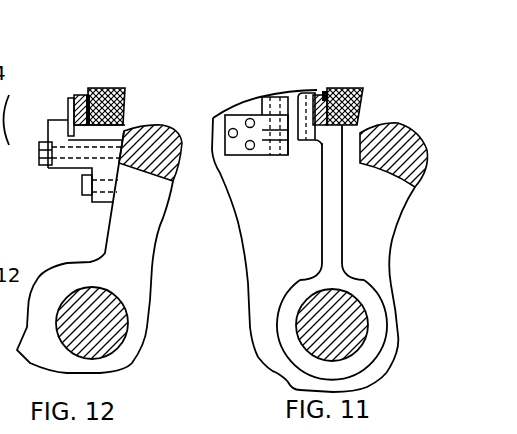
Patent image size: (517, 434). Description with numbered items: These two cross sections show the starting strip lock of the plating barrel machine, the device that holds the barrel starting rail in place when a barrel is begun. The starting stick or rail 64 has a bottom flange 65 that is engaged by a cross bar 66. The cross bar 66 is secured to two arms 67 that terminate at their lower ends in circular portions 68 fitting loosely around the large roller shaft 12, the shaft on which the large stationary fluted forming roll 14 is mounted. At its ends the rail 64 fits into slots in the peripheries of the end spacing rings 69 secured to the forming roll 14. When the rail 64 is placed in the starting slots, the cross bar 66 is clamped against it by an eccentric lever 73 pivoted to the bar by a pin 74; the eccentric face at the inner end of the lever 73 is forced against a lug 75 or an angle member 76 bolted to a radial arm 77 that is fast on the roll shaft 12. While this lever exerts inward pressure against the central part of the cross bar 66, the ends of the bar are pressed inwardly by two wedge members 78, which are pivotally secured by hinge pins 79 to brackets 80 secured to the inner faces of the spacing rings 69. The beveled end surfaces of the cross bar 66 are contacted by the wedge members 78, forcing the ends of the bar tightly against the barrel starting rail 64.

In FIG. 12, the shaft 12 is at (120, 323).
In FIG. 11, the shaft 12 is at (360, 323).
In FIG. 11, the large stationary fluted forming roll 14 is at (400, 133).
In FIG. 12, the starting stick or rail 64 is at (118, 88).
In FIG. 11, the starting stick or rail 64 is at (353, 88).
In FIG. 11, the bottom flange 65 is at (323, 127).
In FIG. 12, the cross bar 66 is at (88, 93).
In FIG. 11, the cross bar 66 is at (327, 97).
In FIG. 11, the arm 67 is at (333, 218).
In FIG. 11, the circular portion 68 is at (287, 300).
In FIG. 11, the end spacing ring 69 is at (213, 118).
In FIG. 12, the eccentric lever 73 is at (75, 94).
In FIG. 12, the pin 74 is at (68, 97).
In FIG. 12, the lug 75 is at (48, 125).
In FIG. 12, the angle member 76 is at (78, 167).
In FIG. 12, the radial arm 77 is at (127, 217).
In FIG. 11, the wedge member 78 is at (287, 100).
In FIG. 11, the hinge pin 79 is at (275, 153).
In FIG. 11, the bracket 80 is at (235, 118).